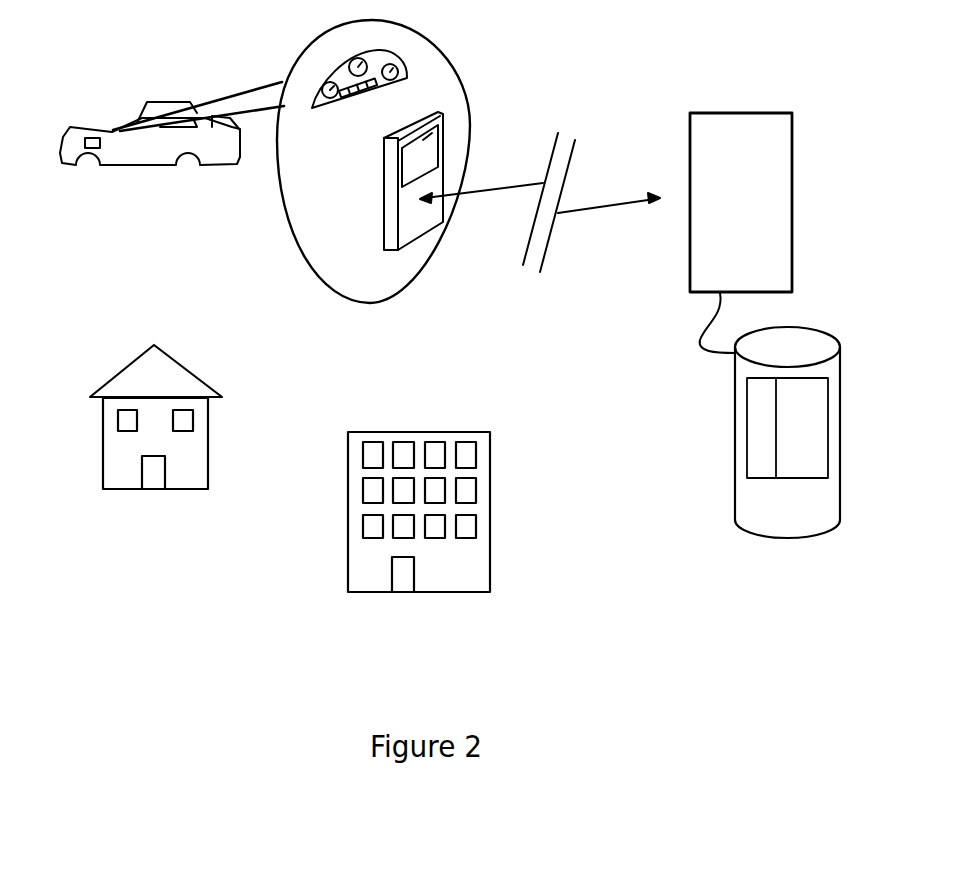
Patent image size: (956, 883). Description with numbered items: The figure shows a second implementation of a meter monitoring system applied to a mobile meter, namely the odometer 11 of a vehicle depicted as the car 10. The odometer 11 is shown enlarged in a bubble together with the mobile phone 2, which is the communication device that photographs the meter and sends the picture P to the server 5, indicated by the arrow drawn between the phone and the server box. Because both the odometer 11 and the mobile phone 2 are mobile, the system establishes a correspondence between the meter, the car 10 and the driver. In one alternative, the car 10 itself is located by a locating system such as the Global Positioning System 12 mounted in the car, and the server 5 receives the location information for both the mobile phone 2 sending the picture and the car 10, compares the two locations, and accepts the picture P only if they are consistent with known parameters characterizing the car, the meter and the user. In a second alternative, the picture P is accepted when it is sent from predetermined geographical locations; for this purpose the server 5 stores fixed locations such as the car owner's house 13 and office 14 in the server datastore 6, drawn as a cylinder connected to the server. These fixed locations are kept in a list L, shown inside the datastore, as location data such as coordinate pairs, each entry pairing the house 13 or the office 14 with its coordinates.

The mobile phone 2 is at (391, 210).
The server 5 is at (792, 268).
The server datastore 6 is at (773, 456).
The car 10 is at (150, 156).
The odometer 11 is at (362, 100).
The Global Positioning System 12 is at (84, 150).
The house 13 is at (210, 445).
The office 14 is at (491, 473).
The picture P is at (443, 130).
The list L is at (797, 478).